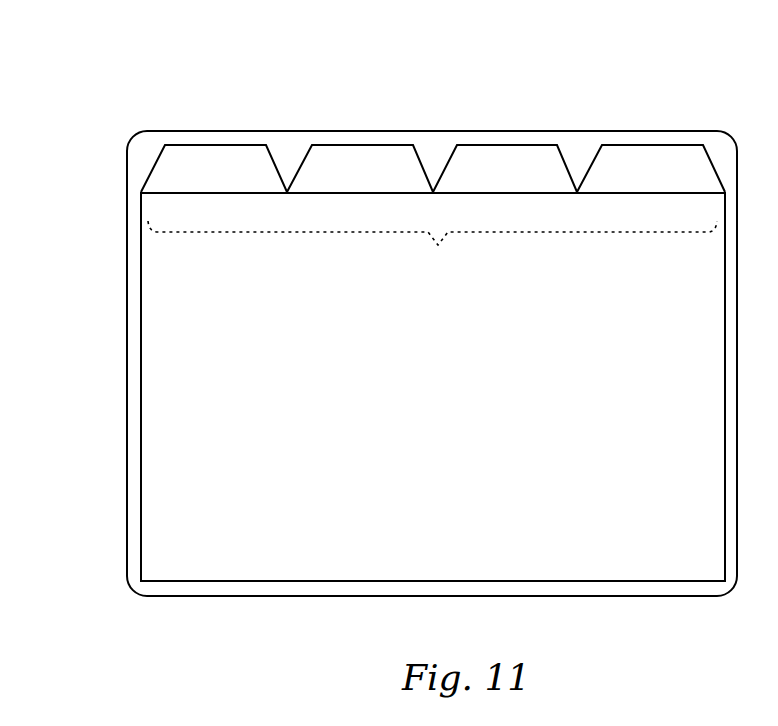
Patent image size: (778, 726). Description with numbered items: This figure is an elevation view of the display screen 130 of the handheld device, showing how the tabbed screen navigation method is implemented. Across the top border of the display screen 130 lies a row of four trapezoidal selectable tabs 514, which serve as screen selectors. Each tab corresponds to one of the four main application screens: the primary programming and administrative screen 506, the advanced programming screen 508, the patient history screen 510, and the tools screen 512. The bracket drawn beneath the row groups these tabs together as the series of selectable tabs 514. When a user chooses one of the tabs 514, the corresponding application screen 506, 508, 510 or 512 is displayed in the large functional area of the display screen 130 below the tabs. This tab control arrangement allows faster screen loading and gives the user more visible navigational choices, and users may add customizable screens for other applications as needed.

The display screen 130 is at (143, 150).
The primary programming and administrative screen 506 is at (210, 153).
The advanced programming screen 508 is at (353, 155).
The patient history screen 510 is at (495, 160).
The tools screen 512 is at (645, 167).
The selectable tabs 514 is at (432, 251).